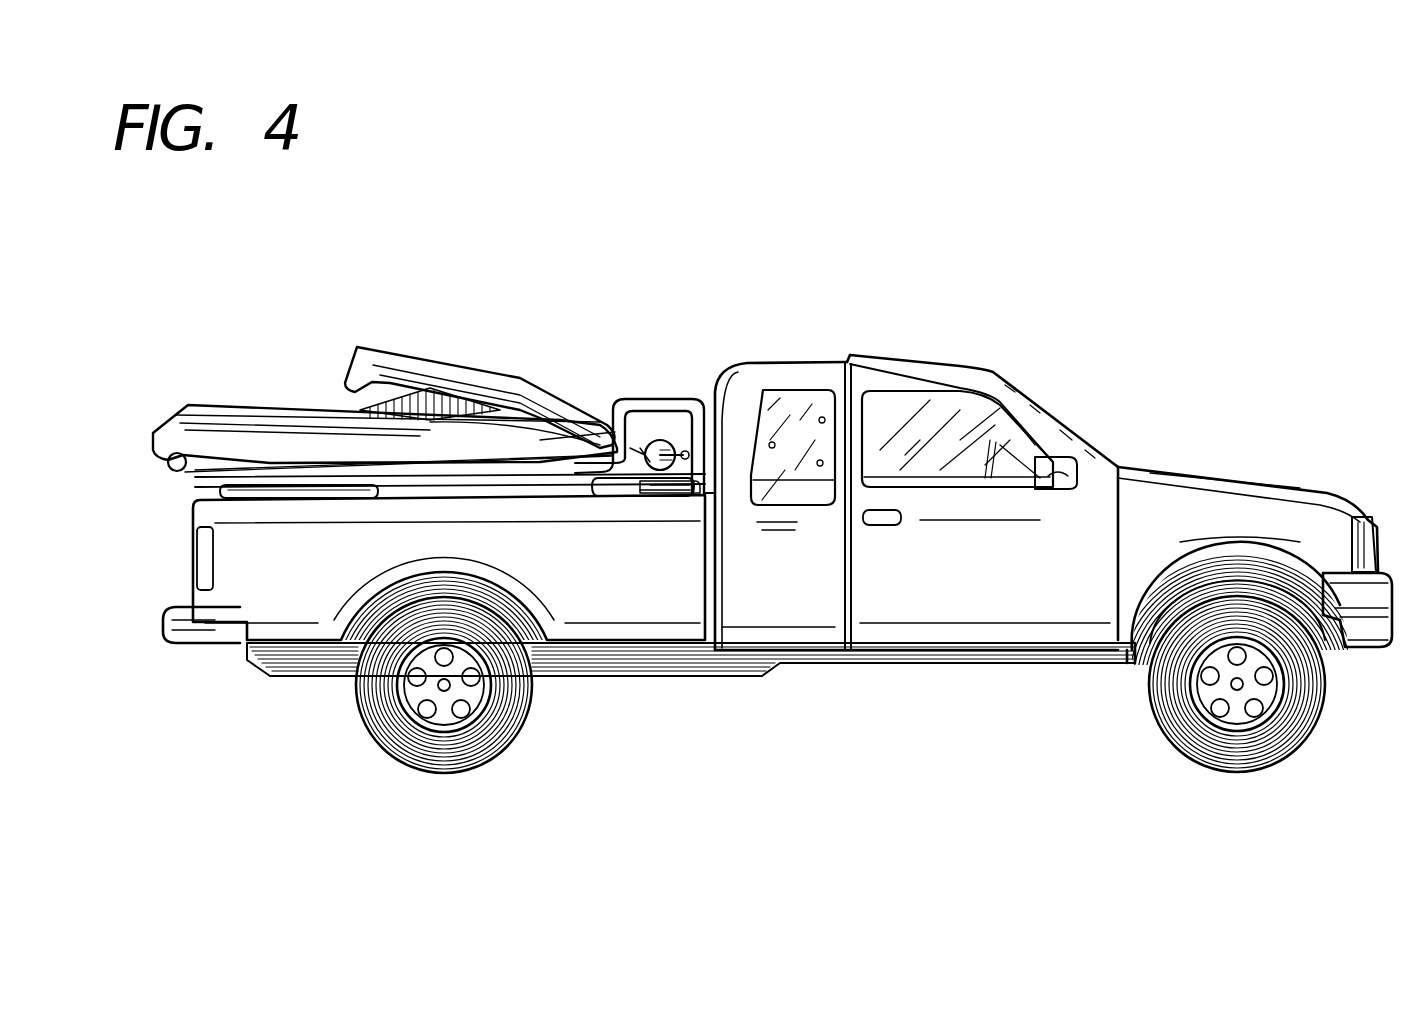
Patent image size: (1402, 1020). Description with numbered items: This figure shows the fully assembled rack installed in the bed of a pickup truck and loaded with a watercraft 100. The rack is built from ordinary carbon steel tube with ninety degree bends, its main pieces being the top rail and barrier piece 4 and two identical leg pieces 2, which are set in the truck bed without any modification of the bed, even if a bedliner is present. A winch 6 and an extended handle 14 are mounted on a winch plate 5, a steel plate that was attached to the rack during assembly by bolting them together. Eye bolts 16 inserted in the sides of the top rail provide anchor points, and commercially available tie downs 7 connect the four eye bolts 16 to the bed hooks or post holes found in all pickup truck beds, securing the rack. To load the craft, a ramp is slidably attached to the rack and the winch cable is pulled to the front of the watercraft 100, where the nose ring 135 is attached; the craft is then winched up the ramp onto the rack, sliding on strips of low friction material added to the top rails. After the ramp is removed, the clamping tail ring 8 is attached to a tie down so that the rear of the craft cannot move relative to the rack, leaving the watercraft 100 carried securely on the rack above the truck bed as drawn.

The personal watercraft 100 is at (237, 407).
The eye bolts 16 is at (266, 492).
The clamping tail ring 8 is at (170, 455).
The tie downs 7 is at (195, 477).
The leg pieces 2 is at (208, 487).
The nose ring 135 is at (642, 438).
The winch 6 is at (660, 440).
The top rail and barrier piece 4 is at (668, 398).
The extended handle 14 is at (680, 430).
The winch plate 5 is at (655, 495).